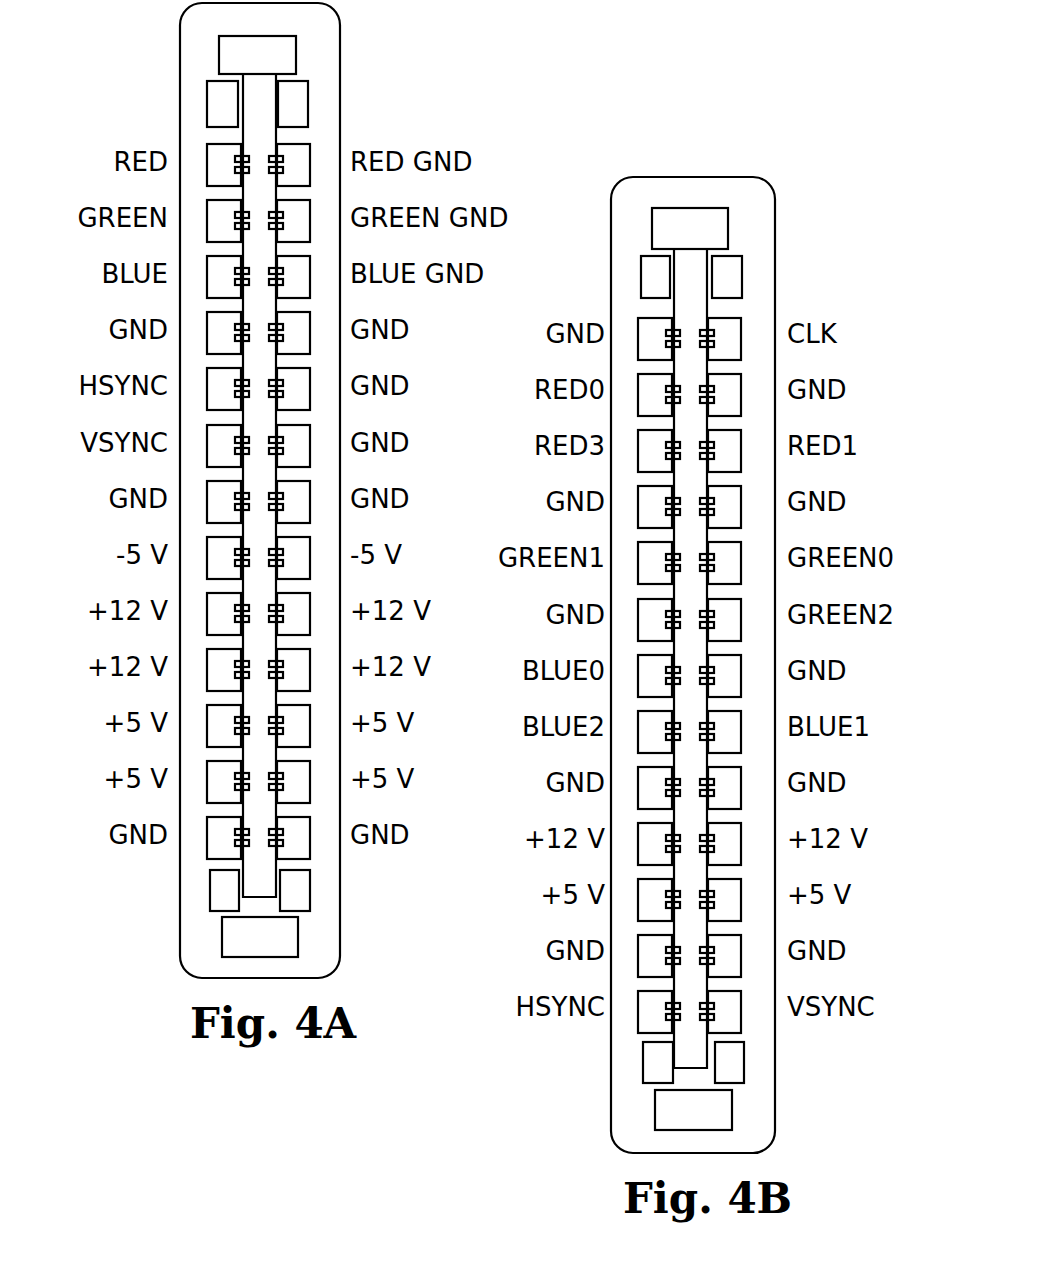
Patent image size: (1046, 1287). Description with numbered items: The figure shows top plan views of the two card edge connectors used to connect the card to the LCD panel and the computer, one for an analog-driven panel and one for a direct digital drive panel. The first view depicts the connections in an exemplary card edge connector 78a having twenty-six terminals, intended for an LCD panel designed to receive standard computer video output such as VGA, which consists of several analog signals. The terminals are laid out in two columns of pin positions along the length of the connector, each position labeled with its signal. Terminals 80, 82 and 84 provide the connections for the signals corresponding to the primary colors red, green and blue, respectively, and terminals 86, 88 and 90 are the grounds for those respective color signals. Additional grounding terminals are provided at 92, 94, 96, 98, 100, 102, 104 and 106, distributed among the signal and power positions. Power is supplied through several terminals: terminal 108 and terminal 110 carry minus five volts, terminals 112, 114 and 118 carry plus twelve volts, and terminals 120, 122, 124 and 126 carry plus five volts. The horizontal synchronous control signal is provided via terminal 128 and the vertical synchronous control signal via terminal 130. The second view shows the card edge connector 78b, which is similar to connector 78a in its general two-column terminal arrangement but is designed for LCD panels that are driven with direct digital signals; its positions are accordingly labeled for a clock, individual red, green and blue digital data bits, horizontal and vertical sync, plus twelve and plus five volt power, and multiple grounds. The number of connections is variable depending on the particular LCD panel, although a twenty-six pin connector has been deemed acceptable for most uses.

In FIG. 4A, the card edge connector 78a is at (340, 50).
In FIG. 4B, the card edge connector 78b is at (775, 230).
In FIG. 4A, the terminal 80 is at (217, 160).
In FIG. 4A, the terminal 82 is at (217, 210).
In FIG. 4A, the terminal 84 is at (217, 267).
In FIG. 4A, the terminal 86 is at (302, 158).
In FIG. 4A, the terminal 88 is at (302, 210).
In FIG. 4A, the terminal 90 is at (302, 268).
In FIG. 4A, the grounding terminal 92 is at (217, 330).
In FIG. 4A, the grounding terminal 94 is at (303, 323).
In FIG. 4A, the grounding terminal 96 is at (302, 383).
In FIG. 4A, the grounding terminal 98 is at (302, 432).
In FIG. 4A, the grounding terminal 100 is at (217, 495).
In FIG. 4A, the grounding terminal 102 is at (302, 495).
In FIG. 4A, the grounding terminal 104 is at (215, 847).
In FIG. 4A, the grounding terminal 106 is at (303, 840).
In FIG. 4A, the terminal 108 is at (217, 553).
In FIG. 4A, the terminal 110 is at (302, 552).
In FIG. 4A, the terminal 112 is at (217, 612).
In FIG. 4A, the terminal 114 is at (217, 667).
In FIG. 4A, the terminal 118 is at (302, 662).
In FIG. 4A, the terminal 120 is at (217, 718).
In FIG. 4A, the terminal 122 is at (302, 717).
In FIG. 4A, the terminal 124 is at (222, 783).
In FIG. 4A, the terminal 126 is at (302, 775).
In FIG. 4A, the terminal 128 is at (217, 383).
In FIG. 4A, the terminal 130 is at (217, 440).